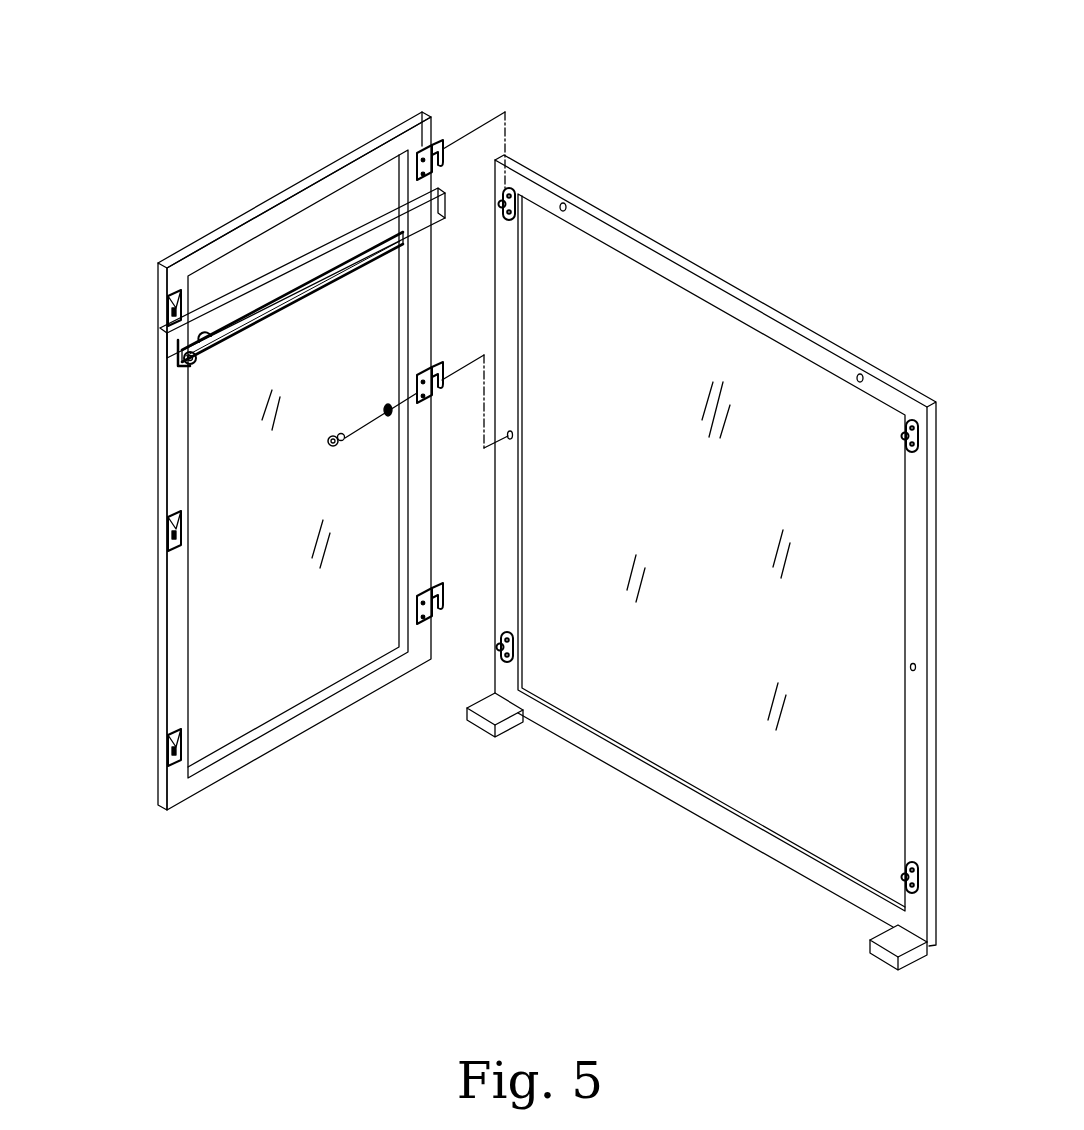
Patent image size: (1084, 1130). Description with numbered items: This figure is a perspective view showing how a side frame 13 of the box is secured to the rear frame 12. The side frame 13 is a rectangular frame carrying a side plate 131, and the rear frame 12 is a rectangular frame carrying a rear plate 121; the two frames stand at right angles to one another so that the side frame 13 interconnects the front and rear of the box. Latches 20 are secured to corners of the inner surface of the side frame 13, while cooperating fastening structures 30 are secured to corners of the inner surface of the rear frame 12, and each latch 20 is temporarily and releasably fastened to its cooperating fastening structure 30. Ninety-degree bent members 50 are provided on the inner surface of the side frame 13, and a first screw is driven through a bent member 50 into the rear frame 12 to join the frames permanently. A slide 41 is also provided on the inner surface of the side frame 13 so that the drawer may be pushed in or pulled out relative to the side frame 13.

The rear frame 12 is at (752, 318).
The rear plate 121 is at (718, 762).
The side frame 13 is at (320, 183).
The side plate 131 is at (308, 657).
The latch 20 is at (245, 424).
The cooperating fastening structure 30 is at (516, 187).
The slide 41 is at (305, 262).
The 90-degree bent member 50 is at (437, 370).